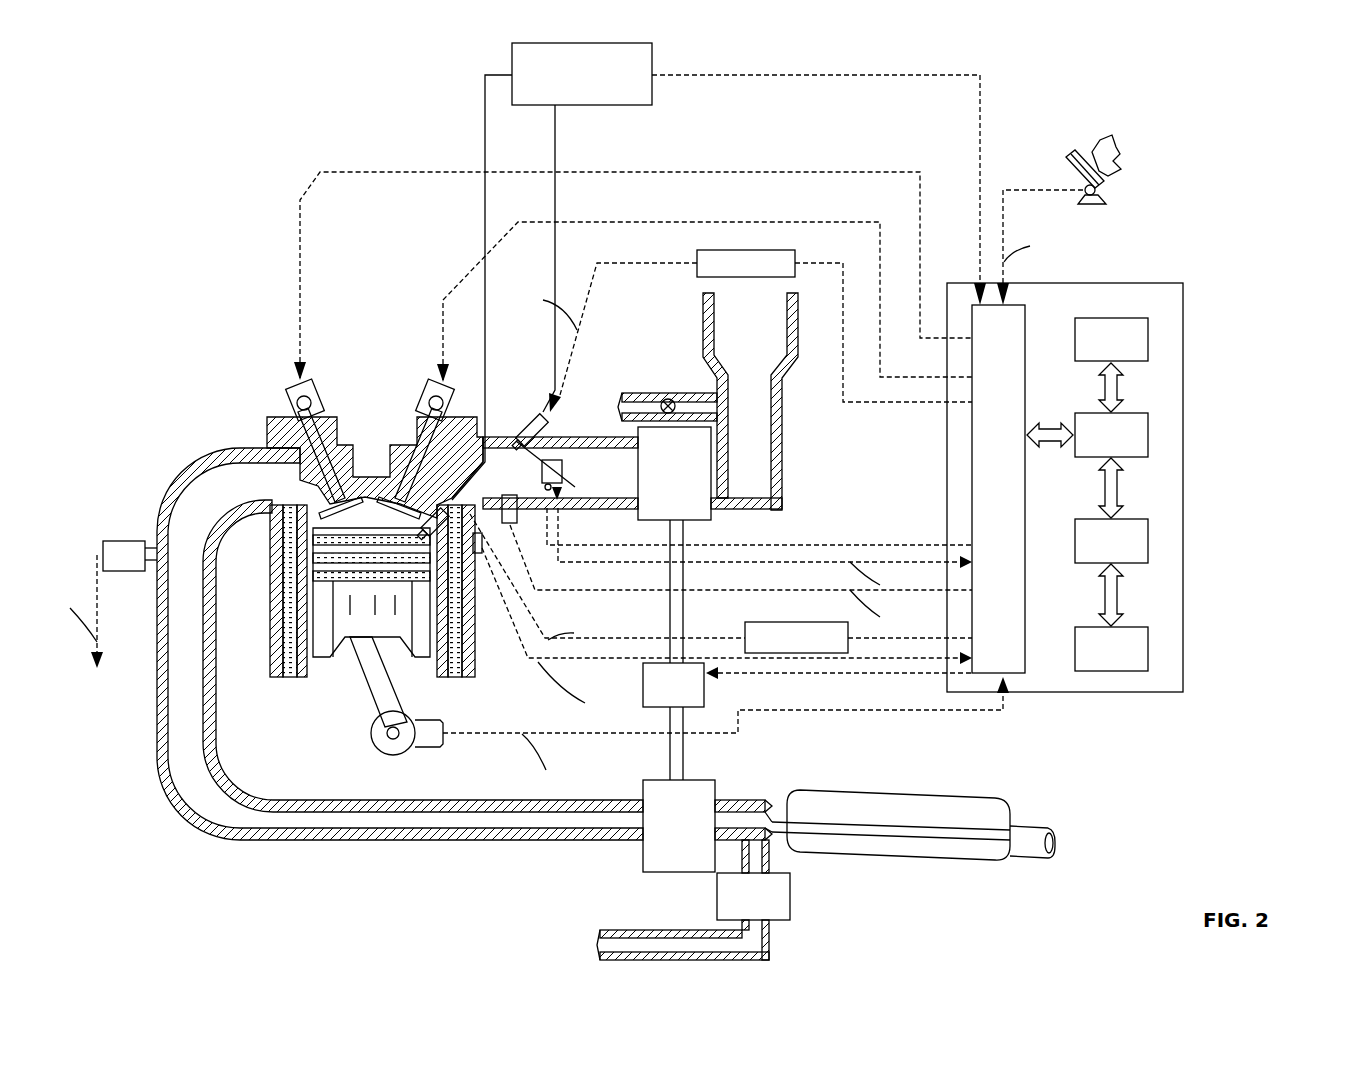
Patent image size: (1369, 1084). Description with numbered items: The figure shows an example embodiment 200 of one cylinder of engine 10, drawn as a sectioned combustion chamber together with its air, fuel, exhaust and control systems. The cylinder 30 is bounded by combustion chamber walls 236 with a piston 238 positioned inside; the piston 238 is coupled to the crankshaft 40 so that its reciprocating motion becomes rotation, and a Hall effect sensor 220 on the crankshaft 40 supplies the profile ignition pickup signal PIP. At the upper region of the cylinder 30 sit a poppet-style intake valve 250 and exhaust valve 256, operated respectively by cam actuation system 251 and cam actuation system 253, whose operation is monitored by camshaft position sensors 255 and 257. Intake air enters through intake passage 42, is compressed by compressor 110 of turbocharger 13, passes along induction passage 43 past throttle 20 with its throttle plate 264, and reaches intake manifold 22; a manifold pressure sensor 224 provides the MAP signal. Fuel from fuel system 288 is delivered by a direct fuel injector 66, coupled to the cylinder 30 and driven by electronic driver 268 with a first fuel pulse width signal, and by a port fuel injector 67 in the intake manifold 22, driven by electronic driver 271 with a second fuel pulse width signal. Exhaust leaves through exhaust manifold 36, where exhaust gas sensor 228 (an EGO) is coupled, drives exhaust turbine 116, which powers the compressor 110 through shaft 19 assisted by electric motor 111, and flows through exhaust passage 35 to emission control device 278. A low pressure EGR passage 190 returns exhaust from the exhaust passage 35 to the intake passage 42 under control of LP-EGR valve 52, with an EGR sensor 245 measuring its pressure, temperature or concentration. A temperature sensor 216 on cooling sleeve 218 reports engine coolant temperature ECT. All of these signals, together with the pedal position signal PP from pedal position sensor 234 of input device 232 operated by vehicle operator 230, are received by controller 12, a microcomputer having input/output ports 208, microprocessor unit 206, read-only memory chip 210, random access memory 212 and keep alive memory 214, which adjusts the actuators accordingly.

The engine 10 is at (564, 506).
The example embodiment 200 is at (1314, 155).
The controller 12 is at (1108, 474).
The input/output ports 208 is at (1027, 310).
The read-only memory chip 210 is at (1148, 332).
The microprocessor unit 206 is at (1148, 430).
The random access memory 212 is at (1148, 538).
The keep alive memory 214 is at (1148, 650).
The vehicle operator 230 is at (1120, 155).
The input device 232 is at (1072, 168).
The pedal position sensor 234 is at (1097, 191).
The fuel system 288 is at (746, 163).
The intake manifold 22 is at (482, 287).
The fuel injector 67 is at (540, 420).
The electronic driver 271 is at (697, 262).
The electronic driver 268 is at (745, 630).
The exhaust manifold 36 is at (400, 644).
The cylinder 30 is at (332, 522).
The camshaft position sensor 255 is at (478, 412).
The combustion chamber walls 236 is at (306, 680).
The piston 238 is at (358, 640).
The crankshaft 40 is at (382, 750).
The Hall effect sensor 220 is at (440, 748).
The cam actuation system 253 is at (314, 384).
The camshaft position sensor 257 is at (297, 400).
The exhaust valve 256 is at (325, 495).
The cam actuation system 251 is at (432, 384).
The intake valve 250 is at (400, 493).
The fuel injector 66 is at (438, 510).
The throttle plate 264 is at (526, 442).
The throttle 20 is at (557, 458).
The induction passage 43 is at (632, 473).
The compressor 110 is at (674, 473).
The intake passage 42 is at (750, 401).
The LP-EGR passage 190 is at (650, 400).
The LP-EGR valve 52 is at (672, 400).
The sensor 224 is at (515, 527).
The cooling sleeve 218 is at (478, 655).
The temperature sensor 216 is at (493, 600).
The shaft 19 is at (685, 742).
The electric motor 111 is at (807, 685).
The exhaust turbine 116 is at (679, 826).
The turbocharger 13 is at (624, 754).
The exhaust passage 35 is at (730, 802).
The emission control device 278 is at (880, 794).
The EGR sensor 245 is at (790, 905).
The exhaust gas sensor 228 is at (103, 546).